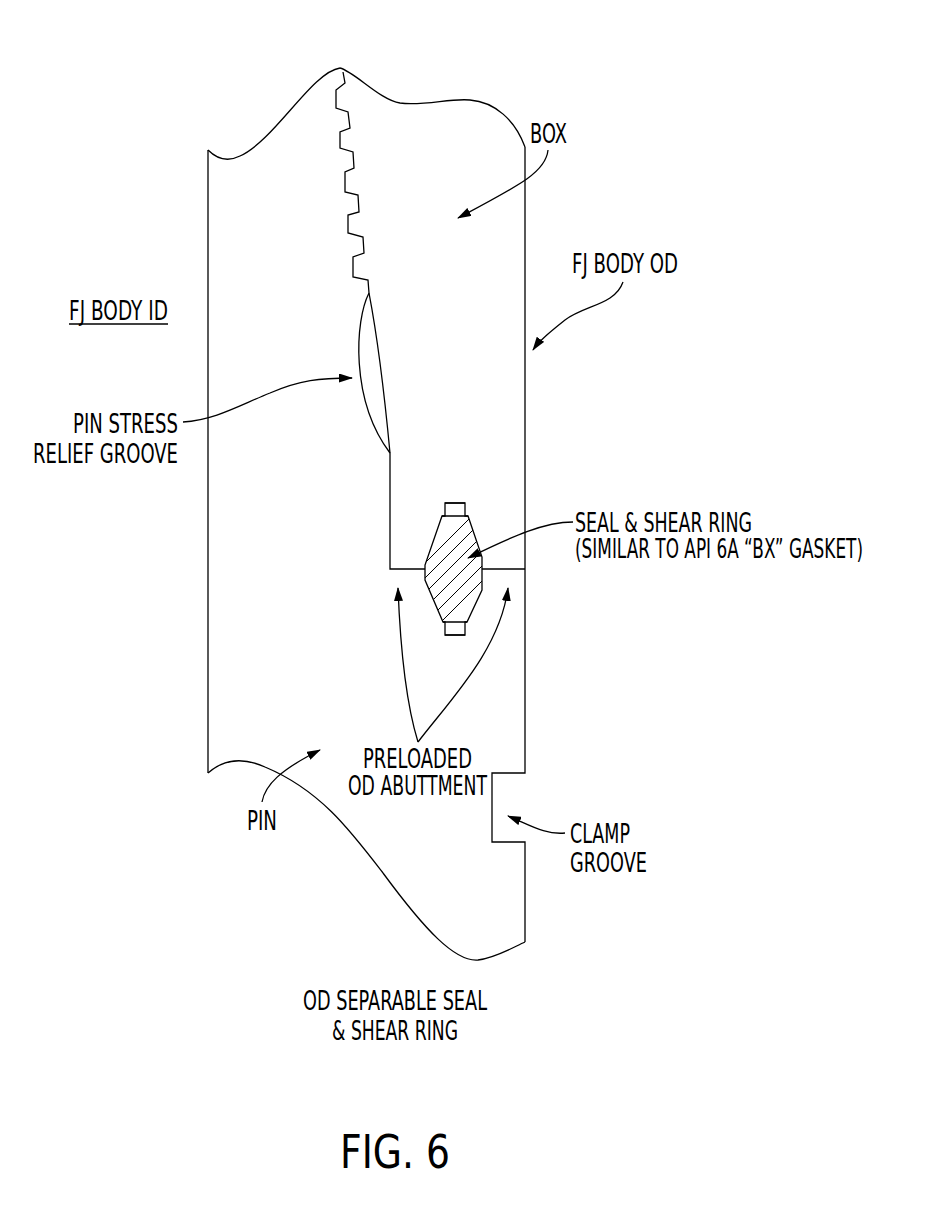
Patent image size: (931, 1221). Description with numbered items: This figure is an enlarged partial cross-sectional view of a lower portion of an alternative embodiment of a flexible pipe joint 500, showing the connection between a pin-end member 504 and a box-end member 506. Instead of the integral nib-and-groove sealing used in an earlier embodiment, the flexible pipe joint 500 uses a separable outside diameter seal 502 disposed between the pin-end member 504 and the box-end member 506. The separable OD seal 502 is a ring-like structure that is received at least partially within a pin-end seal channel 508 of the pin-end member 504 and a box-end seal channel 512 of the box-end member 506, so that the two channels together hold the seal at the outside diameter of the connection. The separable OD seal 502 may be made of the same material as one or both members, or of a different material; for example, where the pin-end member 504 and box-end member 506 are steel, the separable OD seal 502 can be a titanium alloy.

The flexible pipe joint 500 is at (426, 488).
The separable outside diameter (OD) seal 502 is at (458, 548).
The pin-end member 504 is at (255, 592).
The box-end member 506 is at (503, 235).
The pin-end seal channel 508 is at (453, 637).
The box-end seal channel 512 is at (465, 502).